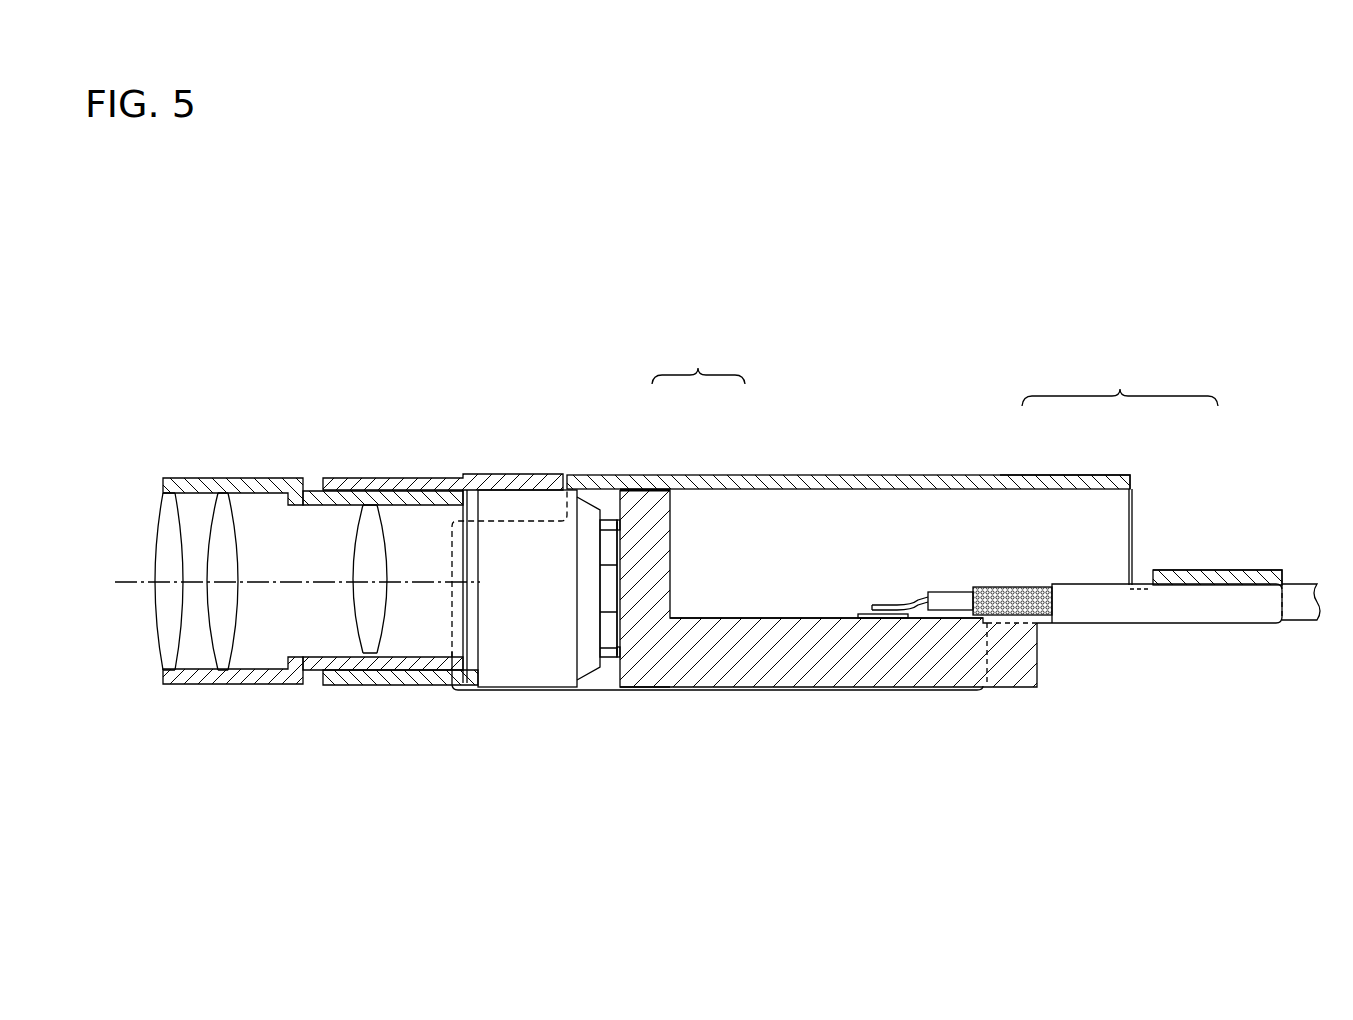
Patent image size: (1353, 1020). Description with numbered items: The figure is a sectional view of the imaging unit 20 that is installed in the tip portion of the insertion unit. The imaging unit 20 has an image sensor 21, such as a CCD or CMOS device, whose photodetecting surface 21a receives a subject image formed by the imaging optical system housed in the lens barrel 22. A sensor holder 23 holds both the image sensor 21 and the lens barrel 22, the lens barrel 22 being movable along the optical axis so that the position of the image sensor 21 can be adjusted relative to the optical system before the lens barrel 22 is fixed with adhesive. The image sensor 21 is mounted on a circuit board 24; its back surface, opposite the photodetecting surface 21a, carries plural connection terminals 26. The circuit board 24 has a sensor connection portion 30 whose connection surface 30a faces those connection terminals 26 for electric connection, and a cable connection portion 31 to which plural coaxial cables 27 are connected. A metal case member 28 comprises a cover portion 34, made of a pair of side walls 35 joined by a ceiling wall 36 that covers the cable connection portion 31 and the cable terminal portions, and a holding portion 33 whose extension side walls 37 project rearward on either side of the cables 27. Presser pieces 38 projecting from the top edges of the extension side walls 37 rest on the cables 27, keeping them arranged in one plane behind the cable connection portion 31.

The imaging unit 20 is at (160, 339).
The image sensor 21 is at (508, 677).
The photodetecting surface 21a is at (478, 615).
The lens barrel 22 is at (230, 477).
The sensor holder 23 is at (400, 477).
The circuit board 24 is at (698, 363).
The connection terminals 26 is at (612, 520).
The cable 27 is at (1095, 613).
The case member 28 is at (1120, 385).
The sensor connection portion 30 is at (647, 492).
The connection surface 30a is at (614, 688).
The cable connection portion 31 is at (732, 614).
The holding portion 33 is at (1198, 570).
The cover portion 34 is at (1042, 475).
The side walls 35 is at (607, 683).
The ceiling wall 36 is at (891, 475).
The extension side walls 37 is at (1193, 628).
The presser pieces 38 is at (1242, 570).